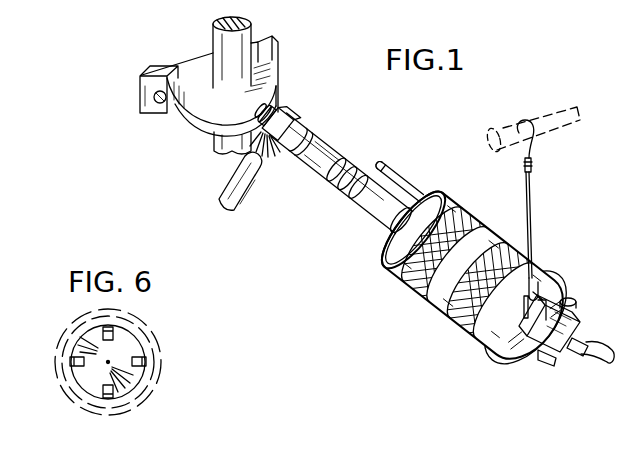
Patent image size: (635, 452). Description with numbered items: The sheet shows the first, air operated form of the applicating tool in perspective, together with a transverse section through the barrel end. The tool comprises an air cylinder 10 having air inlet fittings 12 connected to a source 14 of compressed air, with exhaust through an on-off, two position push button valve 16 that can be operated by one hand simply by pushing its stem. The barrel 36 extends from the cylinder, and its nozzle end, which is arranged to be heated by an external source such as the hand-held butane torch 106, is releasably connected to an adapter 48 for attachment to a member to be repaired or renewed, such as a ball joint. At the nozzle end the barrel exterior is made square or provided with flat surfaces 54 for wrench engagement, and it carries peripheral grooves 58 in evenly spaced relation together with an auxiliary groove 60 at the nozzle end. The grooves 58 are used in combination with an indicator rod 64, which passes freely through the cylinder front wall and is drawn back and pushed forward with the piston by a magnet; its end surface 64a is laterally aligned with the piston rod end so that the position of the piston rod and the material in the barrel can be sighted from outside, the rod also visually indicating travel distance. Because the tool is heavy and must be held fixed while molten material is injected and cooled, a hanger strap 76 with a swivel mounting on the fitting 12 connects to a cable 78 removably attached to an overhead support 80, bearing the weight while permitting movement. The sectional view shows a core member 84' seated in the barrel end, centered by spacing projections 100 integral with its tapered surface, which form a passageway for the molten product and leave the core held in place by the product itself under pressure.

In FIG. 1, the air cylinder 10 is at (403, 290).
In FIG. 1, the air inlet fittings 12 is at (531, 346).
In FIG. 1, the source of compressed air 14 is at (590, 362).
In FIG. 1, the push button valve 16 is at (579, 329).
In FIG. 1, the barrel 36 is at (336, 156).
In FIG. 6, the barrel 36 is at (158, 342).
In FIG. 1, the adapter 48 is at (242, 126).
In FIG. 1, the flat surfaces 54 is at (274, 118).
In FIG. 1, the peripheral grooves 58 is at (371, 180).
In FIG. 1, the auxiliary groove 60 is at (312, 140).
In FIG. 1, the indicator rod 64 is at (401, 184).
In FIG. 1, the end surface 64a is at (380, 167).
In FIG. 1, the hanger strap 76 is at (564, 292).
In FIG. 1, the cable 78 is at (534, 209).
In FIG. 1, the overhead support 80 is at (496, 135).
In FIG. 6, the core member 84' is at (91, 370).
In FIG. 6, the spacing projections 100 is at (72, 356).
In FIG. 1, the hand-held butane torch 106 is at (257, 187).